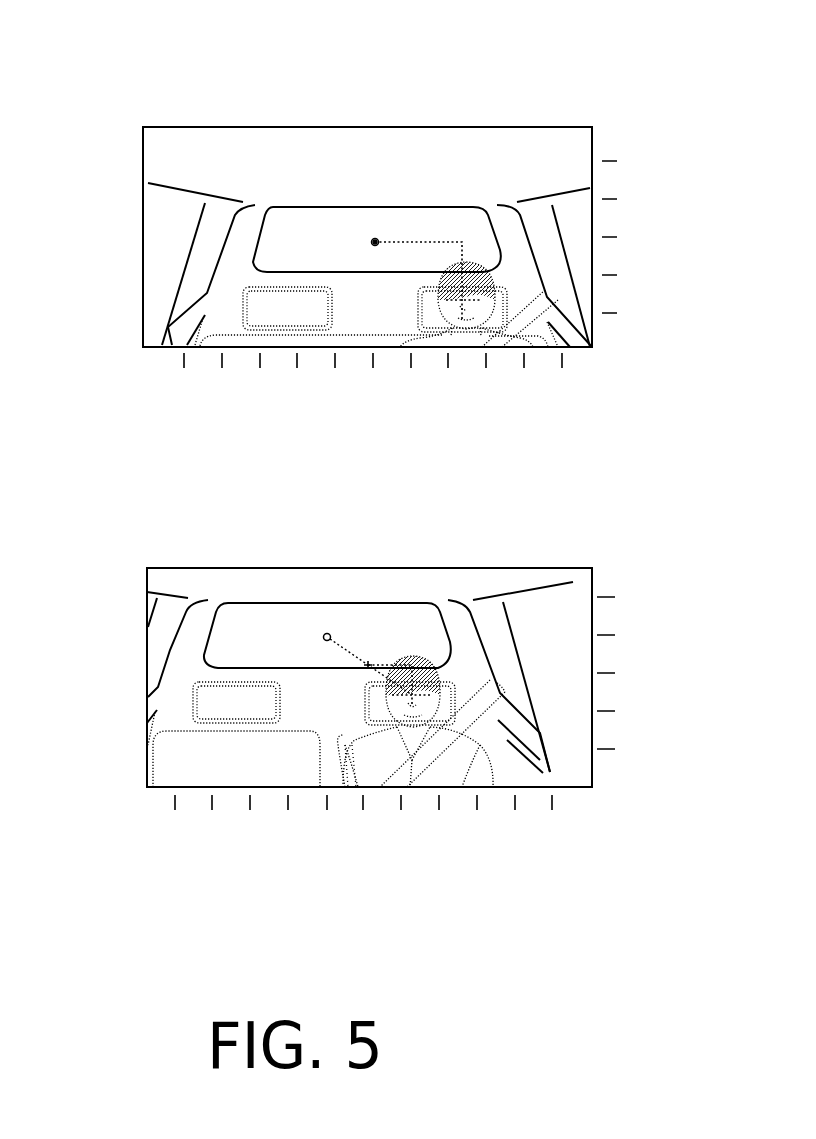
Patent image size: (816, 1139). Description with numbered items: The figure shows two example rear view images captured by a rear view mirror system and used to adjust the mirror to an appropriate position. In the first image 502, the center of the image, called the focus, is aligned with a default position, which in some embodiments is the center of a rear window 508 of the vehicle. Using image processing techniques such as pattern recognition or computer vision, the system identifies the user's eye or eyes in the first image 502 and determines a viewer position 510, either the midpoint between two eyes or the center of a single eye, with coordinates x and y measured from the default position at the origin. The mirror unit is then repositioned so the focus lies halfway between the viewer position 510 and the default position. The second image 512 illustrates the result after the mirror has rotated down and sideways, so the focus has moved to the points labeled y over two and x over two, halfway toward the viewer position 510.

The first image 502 is at (143, 156).
The rear window 508 is at (290, 222).
The viewer position 510 is at (452, 300).
The image 512 is at (147, 590).